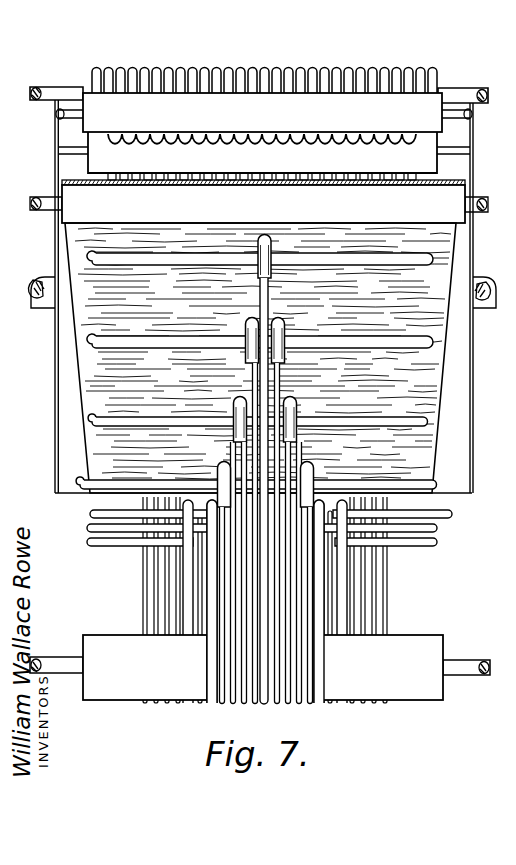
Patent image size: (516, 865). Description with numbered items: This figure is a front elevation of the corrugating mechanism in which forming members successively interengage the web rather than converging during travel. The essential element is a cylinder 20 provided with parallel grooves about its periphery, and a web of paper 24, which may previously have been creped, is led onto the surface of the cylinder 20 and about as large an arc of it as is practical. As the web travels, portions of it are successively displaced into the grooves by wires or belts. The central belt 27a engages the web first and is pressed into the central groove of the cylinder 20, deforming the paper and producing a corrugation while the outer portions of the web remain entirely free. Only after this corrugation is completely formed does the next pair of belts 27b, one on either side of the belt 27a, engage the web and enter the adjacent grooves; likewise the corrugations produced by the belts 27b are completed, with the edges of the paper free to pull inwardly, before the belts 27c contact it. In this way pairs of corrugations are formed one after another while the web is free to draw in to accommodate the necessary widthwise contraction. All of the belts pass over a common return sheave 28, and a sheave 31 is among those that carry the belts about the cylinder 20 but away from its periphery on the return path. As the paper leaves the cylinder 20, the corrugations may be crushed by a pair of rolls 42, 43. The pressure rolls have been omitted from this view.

The cylinder 20 is at (455, 408).
The web of paper 24 is at (450, 180).
The central belt 27a is at (267, 297).
The pair of belts 27b is at (247, 382).
The belts 27c is at (232, 443).
The common return sheave 28 is at (430, 73).
The sheave 31 is at (410, 690).
The crushing roll 42 is at (427, 147).
The crushing roll 43 is at (92, 118).